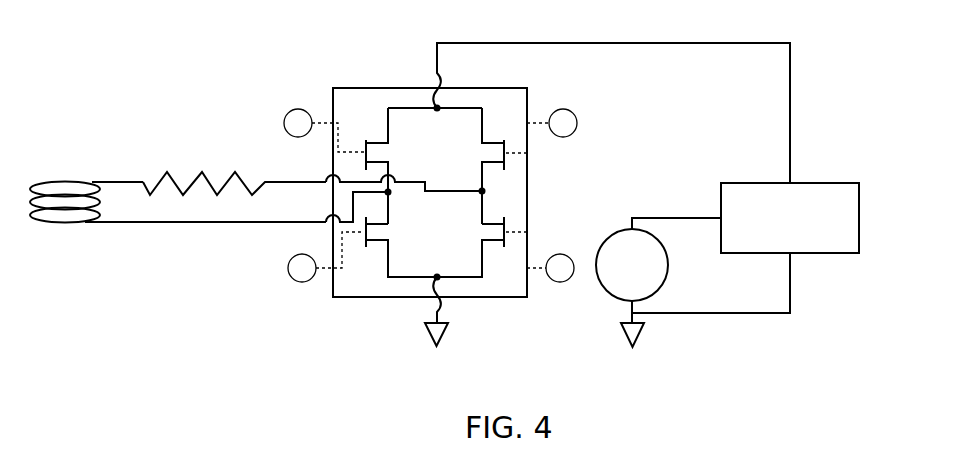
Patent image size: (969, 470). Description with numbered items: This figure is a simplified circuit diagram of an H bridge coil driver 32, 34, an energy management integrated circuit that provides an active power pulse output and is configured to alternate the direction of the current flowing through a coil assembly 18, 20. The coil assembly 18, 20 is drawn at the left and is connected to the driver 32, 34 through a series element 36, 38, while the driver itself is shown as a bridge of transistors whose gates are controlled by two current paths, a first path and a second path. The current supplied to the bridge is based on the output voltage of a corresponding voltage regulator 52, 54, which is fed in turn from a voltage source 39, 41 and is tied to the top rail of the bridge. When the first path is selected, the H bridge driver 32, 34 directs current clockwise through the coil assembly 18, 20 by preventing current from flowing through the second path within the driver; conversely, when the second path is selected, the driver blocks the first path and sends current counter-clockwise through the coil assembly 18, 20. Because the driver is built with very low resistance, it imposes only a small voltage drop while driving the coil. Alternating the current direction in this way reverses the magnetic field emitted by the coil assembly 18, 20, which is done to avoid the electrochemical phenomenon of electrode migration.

The coil assembly 18 is at (178, 172).
The coil assembly 20 is at (53, 178).
The resistor 36 is at (234, 149).
The resistor 38 is at (175, 155).
The coil driver 32 is at (537, 183).
The coil driver 34 is at (385, 72).
The voltage regulator 52 is at (789, 219).
The voltage regulator 54 is at (847, 168).
The voltage source 39 is at (603, 289).
The voltage source 41 is at (602, 295).